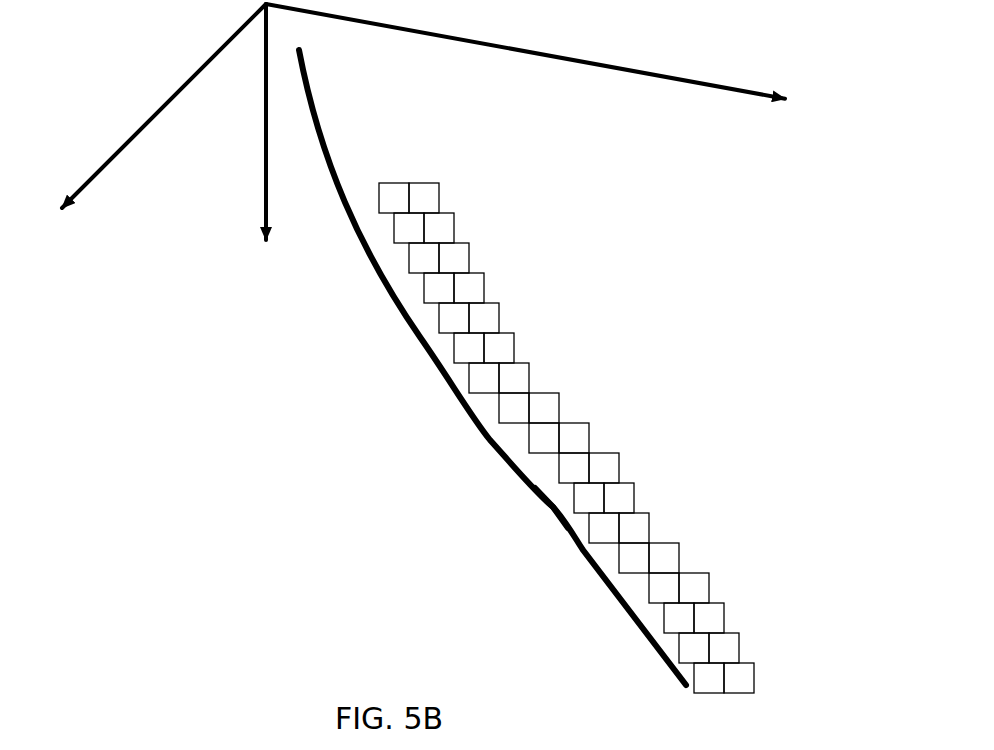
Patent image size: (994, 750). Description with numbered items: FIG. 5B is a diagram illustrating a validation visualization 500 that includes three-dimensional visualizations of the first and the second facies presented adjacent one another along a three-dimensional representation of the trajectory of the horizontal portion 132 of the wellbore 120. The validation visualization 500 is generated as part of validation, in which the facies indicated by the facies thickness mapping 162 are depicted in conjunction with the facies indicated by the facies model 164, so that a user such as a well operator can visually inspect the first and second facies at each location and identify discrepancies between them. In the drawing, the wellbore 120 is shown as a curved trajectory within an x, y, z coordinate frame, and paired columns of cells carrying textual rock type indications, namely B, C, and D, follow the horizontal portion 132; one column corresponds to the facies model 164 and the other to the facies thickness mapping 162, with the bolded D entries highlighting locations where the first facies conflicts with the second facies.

The validation visualization 500 is at (766, 44).
The wellbore 120 is at (398, 127).
The horizontal portion 132 is at (549, 516).
The facies thickness mapping 162 is at (741, 705).
The facies model 164 is at (708, 704).